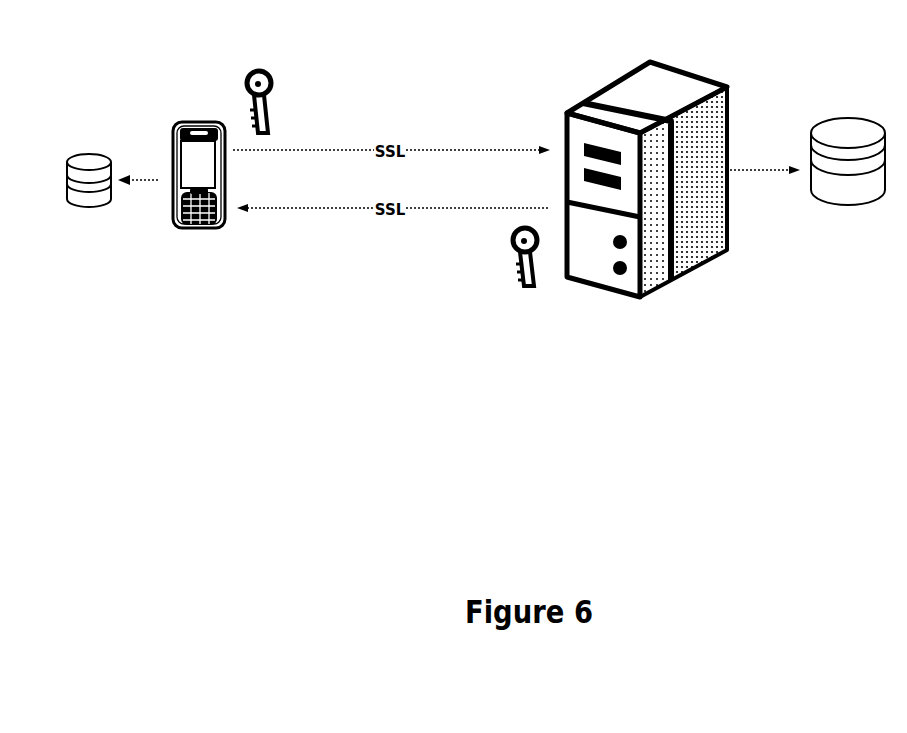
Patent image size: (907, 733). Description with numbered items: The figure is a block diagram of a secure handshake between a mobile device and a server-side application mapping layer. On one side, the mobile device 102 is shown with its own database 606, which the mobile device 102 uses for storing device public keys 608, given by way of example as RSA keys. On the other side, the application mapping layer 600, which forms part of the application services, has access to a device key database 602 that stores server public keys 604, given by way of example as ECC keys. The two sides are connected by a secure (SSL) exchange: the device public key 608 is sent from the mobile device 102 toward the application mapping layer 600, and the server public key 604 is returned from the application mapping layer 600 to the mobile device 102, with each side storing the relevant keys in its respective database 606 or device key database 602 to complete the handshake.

The mobile device 102 is at (200, 128).
The application mapping layer 600 is at (707, 75).
The device key database 602 is at (855, 120).
The server public keys 604 is at (527, 290).
The database 606 is at (98, 152).
The device public keys 608 is at (268, 72).